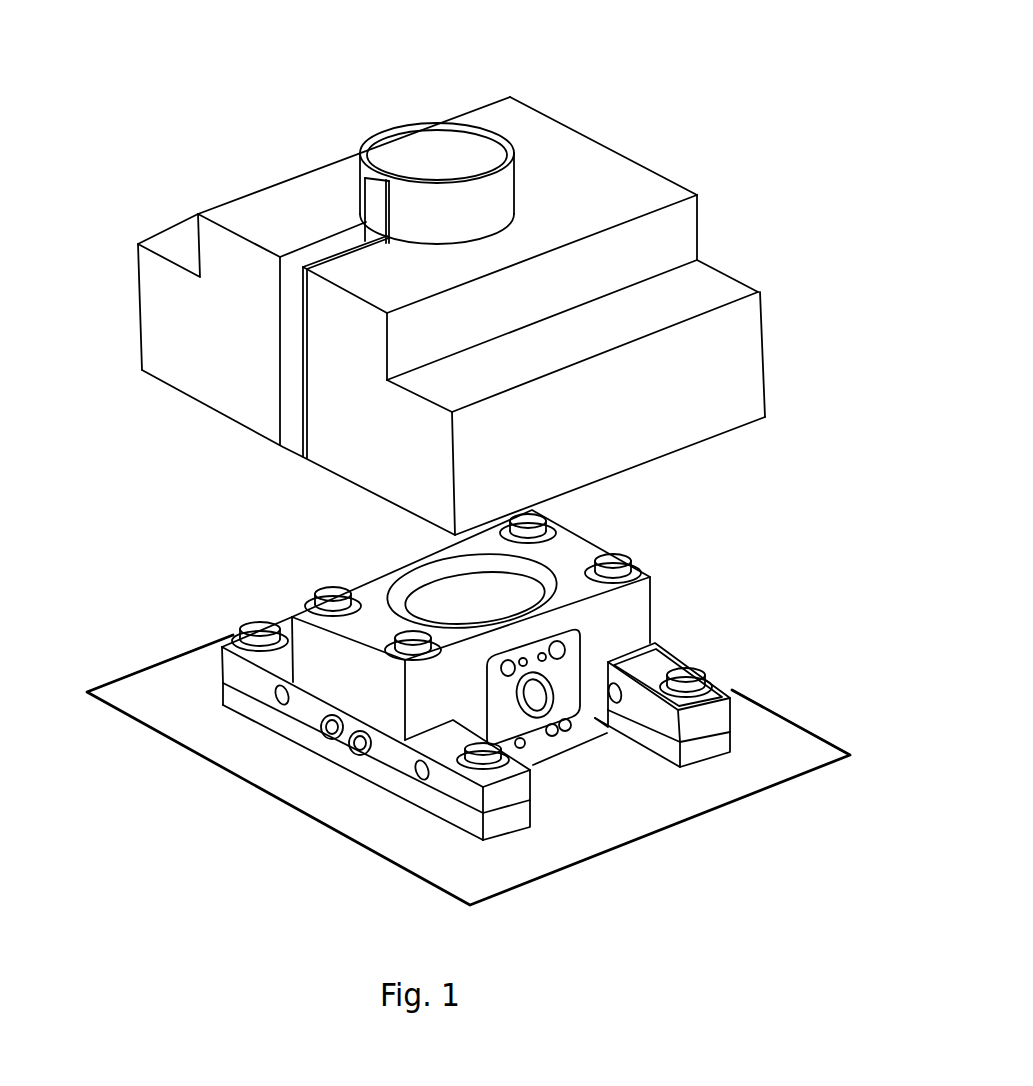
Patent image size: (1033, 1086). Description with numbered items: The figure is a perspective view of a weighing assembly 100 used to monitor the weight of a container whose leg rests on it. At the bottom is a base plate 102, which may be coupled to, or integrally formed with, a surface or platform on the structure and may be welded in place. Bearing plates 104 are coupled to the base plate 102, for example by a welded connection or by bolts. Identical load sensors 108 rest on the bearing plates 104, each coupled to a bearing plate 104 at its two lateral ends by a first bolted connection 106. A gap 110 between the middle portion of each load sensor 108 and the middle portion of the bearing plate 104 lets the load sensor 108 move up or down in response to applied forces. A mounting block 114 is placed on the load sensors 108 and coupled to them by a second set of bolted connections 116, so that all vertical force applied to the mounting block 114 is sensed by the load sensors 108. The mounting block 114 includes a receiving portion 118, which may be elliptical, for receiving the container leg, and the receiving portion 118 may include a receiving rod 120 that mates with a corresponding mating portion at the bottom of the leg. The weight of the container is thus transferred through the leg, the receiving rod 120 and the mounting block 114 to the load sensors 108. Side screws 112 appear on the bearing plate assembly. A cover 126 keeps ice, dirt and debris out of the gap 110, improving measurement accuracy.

The weighing assembly 100 is at (729, 192).
The base plate 102 is at (708, 775).
The bearing plates 104 is at (490, 792).
The first bolted connection 106 is at (255, 628).
The load sensors 108 is at (225, 668).
The gap 110 is at (265, 718).
The side screw 112 is at (323, 722).
The mounting block 114 is at (524, 633).
The second set of bolted connections 116 is at (323, 590).
The receiving portion 118 is at (483, 612).
The receiving rod 120 is at (537, 700).
The cover 126 is at (217, 362).